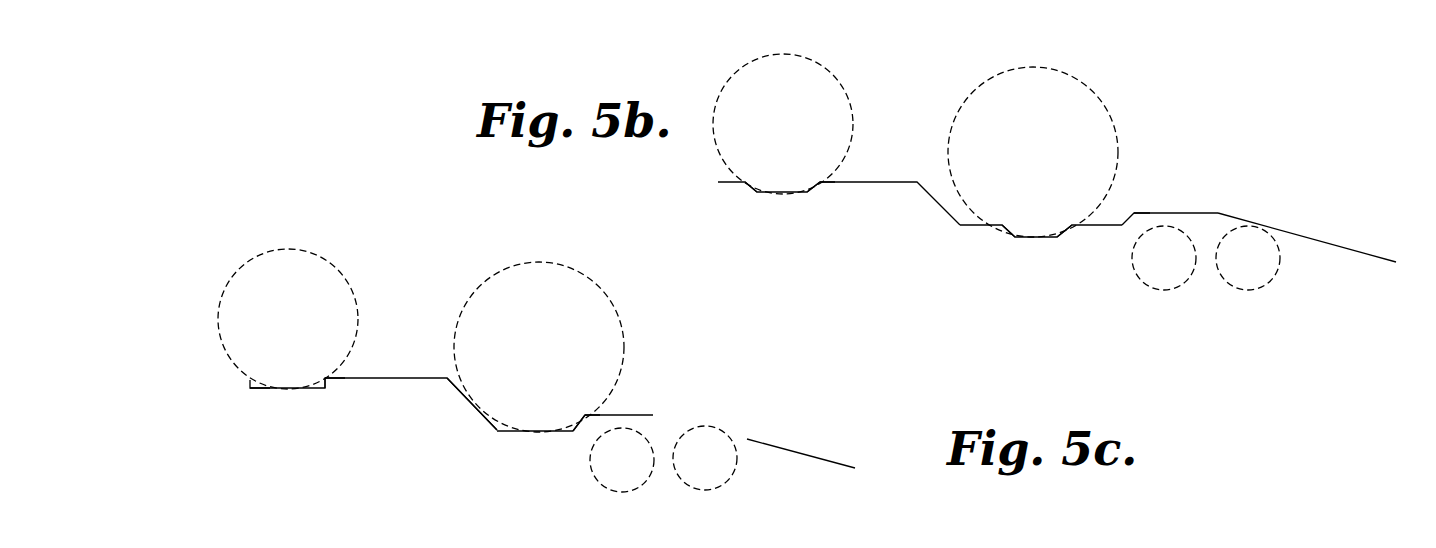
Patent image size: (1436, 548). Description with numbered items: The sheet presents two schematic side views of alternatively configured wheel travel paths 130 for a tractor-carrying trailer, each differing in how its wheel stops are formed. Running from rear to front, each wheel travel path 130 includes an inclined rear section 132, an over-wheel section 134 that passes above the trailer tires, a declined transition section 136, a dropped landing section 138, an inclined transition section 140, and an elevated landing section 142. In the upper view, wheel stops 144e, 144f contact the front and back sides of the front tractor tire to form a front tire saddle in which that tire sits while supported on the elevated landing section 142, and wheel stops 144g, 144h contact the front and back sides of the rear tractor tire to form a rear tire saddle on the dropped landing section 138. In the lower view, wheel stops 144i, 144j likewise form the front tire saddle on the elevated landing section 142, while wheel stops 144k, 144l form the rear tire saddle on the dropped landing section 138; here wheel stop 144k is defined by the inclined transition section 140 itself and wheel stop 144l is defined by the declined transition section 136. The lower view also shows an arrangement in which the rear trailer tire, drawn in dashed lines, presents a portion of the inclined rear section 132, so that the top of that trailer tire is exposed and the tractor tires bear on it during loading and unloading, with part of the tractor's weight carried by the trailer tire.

In FIG. 5B, the wheel travel path 130 is at (1033, 229).
In FIG. 5C, the wheel travel path 130 is at (518, 439).
In FIG. 5B, the inclined rear section 132 is at (1291, 232).
In FIG. 5C, the inclined rear section 132 is at (722, 432).
In FIG. 5B, the over-wheel section 134 is at (1196, 213).
In FIG. 5C, the over-wheel section 134 is at (637, 415).
In FIG. 5B, the declined transition section 136 is at (1124, 222).
In FIG. 5C, the declined transition section 136 is at (575, 434).
In FIG. 5B, the dropped landing section 138 is at (1040, 238).
In FIG. 5C, the dropped landing section 138 is at (523, 433).
In FIG. 5B, the inclined transition section 140 is at (937, 203).
In FIG. 5C, the inclined transition section 140 is at (463, 395).
In FIG. 5B, the elevated landing section 142 is at (780, 194).
In FIG. 5C, the elevated landing section 142 is at (280, 389).
In FIG. 5B, the wheel stop 144e is at (752, 191).
In FIG. 5B, the wheel stop 144f is at (810, 187).
In FIG. 5B, the wheel stop 144g is at (1000, 228).
In FIG. 5B, the wheel stop 144h is at (1068, 229).
In FIG. 5C, the wheel stop 144i is at (250, 381).
In FIG. 5C, the wheel stop 144j is at (328, 382).
In FIG. 5C, the wheel stop 144k is at (492, 421).
In FIG. 5C, the wheel stop 144l is at (587, 419).